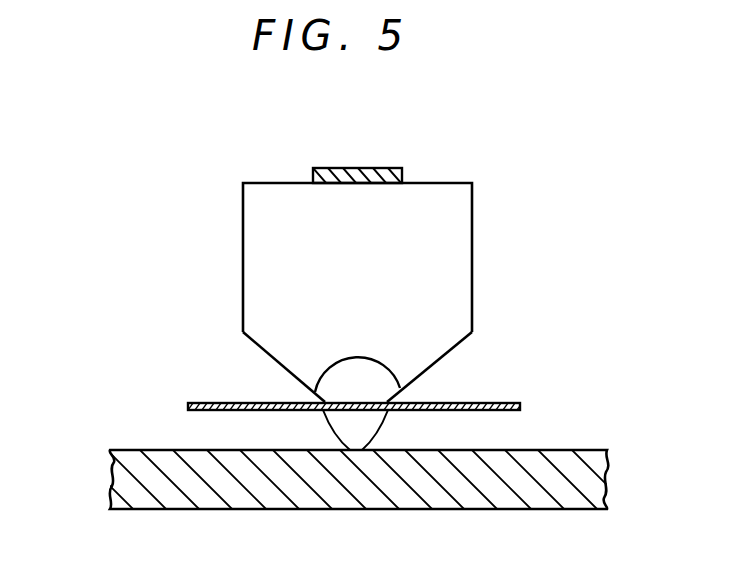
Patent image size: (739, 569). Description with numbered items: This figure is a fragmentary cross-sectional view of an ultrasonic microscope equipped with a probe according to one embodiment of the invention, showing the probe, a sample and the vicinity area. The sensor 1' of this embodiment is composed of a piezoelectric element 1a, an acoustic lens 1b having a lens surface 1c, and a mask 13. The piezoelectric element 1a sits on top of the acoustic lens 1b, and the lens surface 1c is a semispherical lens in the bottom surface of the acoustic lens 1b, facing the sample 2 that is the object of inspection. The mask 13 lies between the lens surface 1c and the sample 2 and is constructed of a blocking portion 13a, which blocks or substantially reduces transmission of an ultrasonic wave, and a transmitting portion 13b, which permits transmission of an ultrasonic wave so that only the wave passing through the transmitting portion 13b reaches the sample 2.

The sensor 1' is at (355, 243).
The piezoelectric element 1a is at (373, 168).
The acoustic lens 1b is at (463, 278).
The lens surface 1c is at (377, 370).
The mask 13 is at (190, 405).
The blocking portion 13a is at (224, 403).
The transmitting portion 13b is at (358, 412).
The sample 2 is at (570, 449).